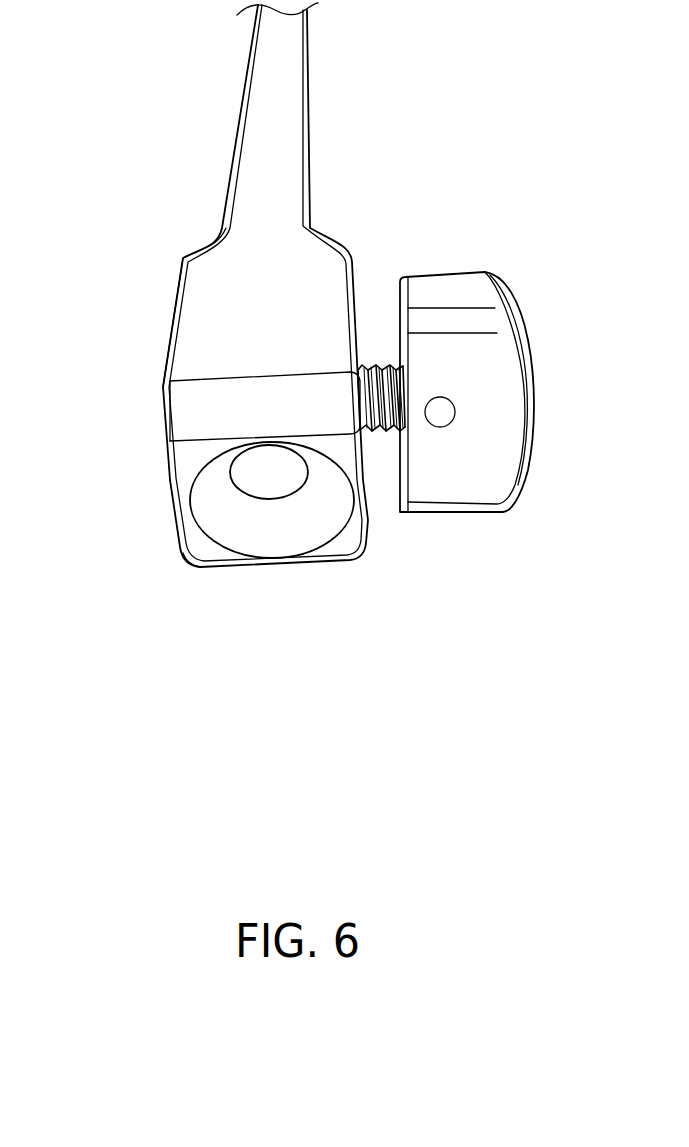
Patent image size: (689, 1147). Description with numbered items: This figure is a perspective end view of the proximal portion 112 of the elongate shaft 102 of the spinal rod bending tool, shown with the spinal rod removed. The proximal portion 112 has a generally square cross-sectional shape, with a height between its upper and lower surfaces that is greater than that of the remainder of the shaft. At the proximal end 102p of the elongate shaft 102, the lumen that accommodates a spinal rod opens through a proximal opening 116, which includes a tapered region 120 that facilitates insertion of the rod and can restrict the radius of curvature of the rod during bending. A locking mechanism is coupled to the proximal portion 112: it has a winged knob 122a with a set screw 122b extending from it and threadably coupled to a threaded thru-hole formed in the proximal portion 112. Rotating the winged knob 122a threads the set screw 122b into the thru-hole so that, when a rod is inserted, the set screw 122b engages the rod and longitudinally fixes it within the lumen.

The elongate shaft 102 is at (274, 40).
The proximal end 102p is at (181, 559).
The proximal portion 112 is at (153, 205).
The proximal opening 116 is at (267, 482).
The tapered region 120 is at (303, 528).
The winged knob 122a is at (485, 273).
The set screw 122b is at (381, 365).